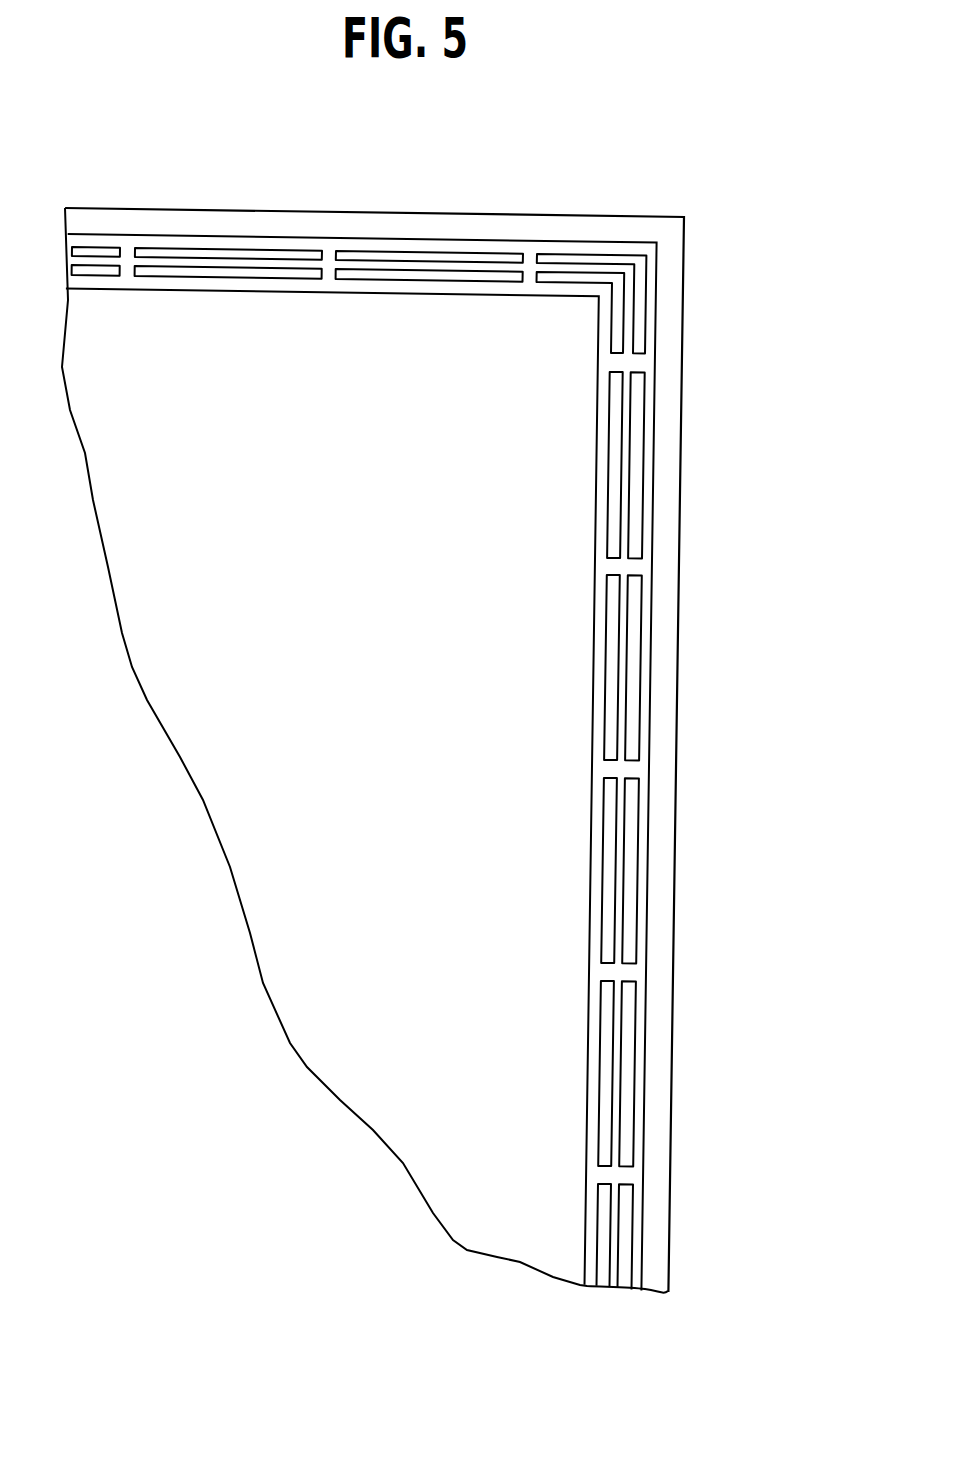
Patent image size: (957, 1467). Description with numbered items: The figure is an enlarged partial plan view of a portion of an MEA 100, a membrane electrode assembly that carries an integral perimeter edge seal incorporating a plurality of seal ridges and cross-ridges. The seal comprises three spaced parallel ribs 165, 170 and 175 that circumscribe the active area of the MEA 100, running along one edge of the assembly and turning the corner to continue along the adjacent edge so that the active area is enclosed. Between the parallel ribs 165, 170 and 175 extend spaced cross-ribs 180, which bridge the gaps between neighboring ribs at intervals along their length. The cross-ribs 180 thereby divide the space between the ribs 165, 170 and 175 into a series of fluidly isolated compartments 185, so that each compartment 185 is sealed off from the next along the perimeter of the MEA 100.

The MEA 100 is at (443, 712).
The rib 165 is at (598, 455).
The rib 170 is at (625, 493).
The rib 175 is at (647, 525).
The cross-ribs 180 is at (328, 257).
The fluidly isolated compartments 185 is at (612, 818).